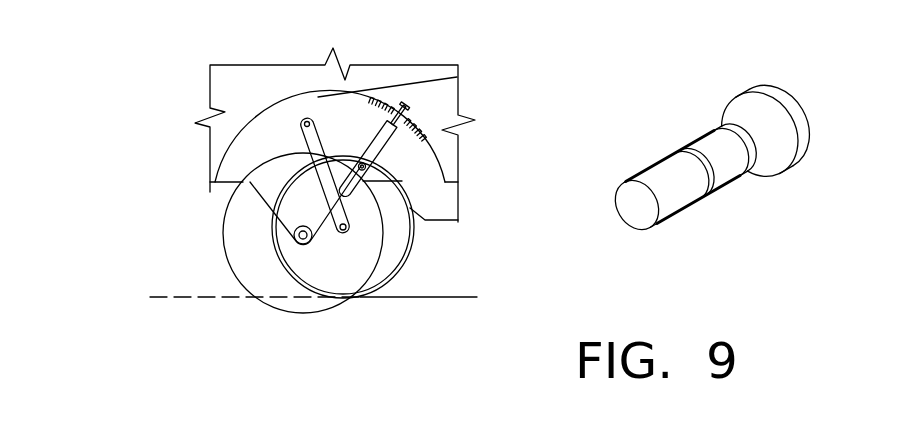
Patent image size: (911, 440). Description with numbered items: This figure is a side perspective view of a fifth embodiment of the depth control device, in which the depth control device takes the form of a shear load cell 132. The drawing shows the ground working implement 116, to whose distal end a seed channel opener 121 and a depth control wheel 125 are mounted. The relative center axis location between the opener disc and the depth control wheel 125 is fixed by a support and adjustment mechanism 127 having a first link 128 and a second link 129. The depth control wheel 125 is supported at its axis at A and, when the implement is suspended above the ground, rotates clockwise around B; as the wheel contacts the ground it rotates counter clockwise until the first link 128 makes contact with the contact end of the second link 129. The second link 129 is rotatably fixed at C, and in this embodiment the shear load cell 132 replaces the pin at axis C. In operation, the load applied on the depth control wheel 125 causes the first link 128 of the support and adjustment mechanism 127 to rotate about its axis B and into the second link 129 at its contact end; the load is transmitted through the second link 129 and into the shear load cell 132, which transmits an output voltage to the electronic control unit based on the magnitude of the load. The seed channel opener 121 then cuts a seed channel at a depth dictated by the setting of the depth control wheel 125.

The ground working implement 116 is at (180, 117).
The seed channel opener 121 is at (325, 313).
The depth control wheel 125 is at (392, 238).
The support and adjustment mechanism 127 is at (353, 128).
The first link 128 is at (250, 182).
The second link 129 is at (378, 151).
The shear load cell 132 is at (670, 122).
The axis of depth control wheel A is at (348, 231).
The axis of first link B is at (303, 120).
The axis of second link C is at (637, 205).